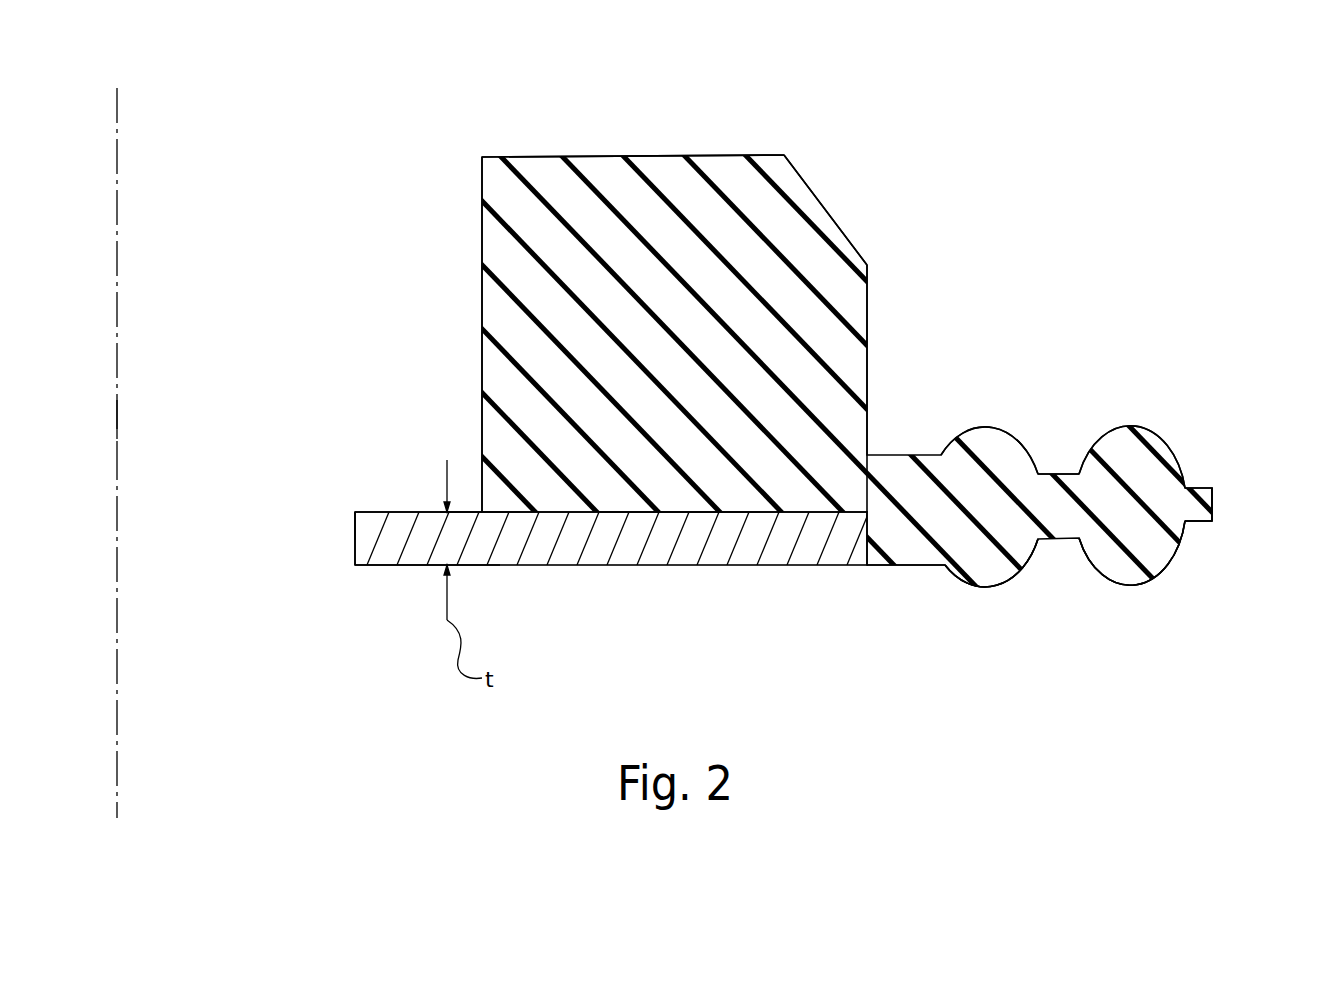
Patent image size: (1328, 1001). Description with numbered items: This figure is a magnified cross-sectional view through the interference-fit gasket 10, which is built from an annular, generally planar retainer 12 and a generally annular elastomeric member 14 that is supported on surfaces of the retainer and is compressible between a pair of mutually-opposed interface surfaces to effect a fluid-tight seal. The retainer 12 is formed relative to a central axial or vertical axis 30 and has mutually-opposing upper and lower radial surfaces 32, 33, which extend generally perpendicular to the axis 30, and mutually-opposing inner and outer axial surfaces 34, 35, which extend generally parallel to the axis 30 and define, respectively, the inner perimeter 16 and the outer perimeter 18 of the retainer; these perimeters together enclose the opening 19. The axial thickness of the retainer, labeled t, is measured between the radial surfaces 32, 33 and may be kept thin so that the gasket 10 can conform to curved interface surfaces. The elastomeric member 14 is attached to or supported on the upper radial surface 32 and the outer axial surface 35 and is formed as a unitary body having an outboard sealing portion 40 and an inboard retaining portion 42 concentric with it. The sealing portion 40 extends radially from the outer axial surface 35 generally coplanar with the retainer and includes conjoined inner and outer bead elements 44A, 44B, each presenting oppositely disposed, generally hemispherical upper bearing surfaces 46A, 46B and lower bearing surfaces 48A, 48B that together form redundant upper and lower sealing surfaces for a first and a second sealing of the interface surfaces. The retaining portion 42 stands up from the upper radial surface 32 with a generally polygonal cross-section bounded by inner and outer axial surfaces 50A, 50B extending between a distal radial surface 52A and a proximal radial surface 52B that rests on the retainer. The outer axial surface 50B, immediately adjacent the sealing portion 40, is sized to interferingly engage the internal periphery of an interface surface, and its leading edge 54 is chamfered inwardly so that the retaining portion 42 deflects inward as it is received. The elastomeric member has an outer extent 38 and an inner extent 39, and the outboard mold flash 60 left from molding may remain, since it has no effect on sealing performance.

The interference-fit gasket 10 is at (1115, 188).
The retainer 12 is at (355, 566).
The elastomeric member 14 is at (1185, 470).
The inner perimeter 16 is at (353, 525).
The outer perimeter 18 is at (870, 524).
The opening 19 is at (40, 438).
The central axial axis 30 is at (120, 767).
The upper radial surface 32 is at (428, 512).
The lower radial surface 33 is at (378, 566).
The inner axial surface 34 is at (353, 548).
The outer axial surface 35 is at (890, 566).
The outer extent 38 is at (1212, 480).
The inner extent 39 is at (476, 513).
The sealing portion 40 is at (1057, 474).
The retaining portion 42 is at (785, 155).
The inner bead element 44A is at (1008, 585).
The outer bead element 44B is at (1172, 567).
The upper bearing surface of inner bead 46A is at (987, 427).
The upper bearing surface of outer bead 46B is at (1155, 427).
The lower bearing surface of inner bead 48A is at (967, 588).
The lower bearing surface of outer bead 48B is at (1127, 588).
The inner axial surface of retaining portion 50A is at (481, 298).
The outer axial surface of retaining portion 50B is at (868, 322).
The distal radial surface 52A is at (600, 156).
The proximal radial surface 52B is at (678, 512).
The leading edge 54 is at (818, 198).
The outboard mold flash 60 is at (1215, 503).